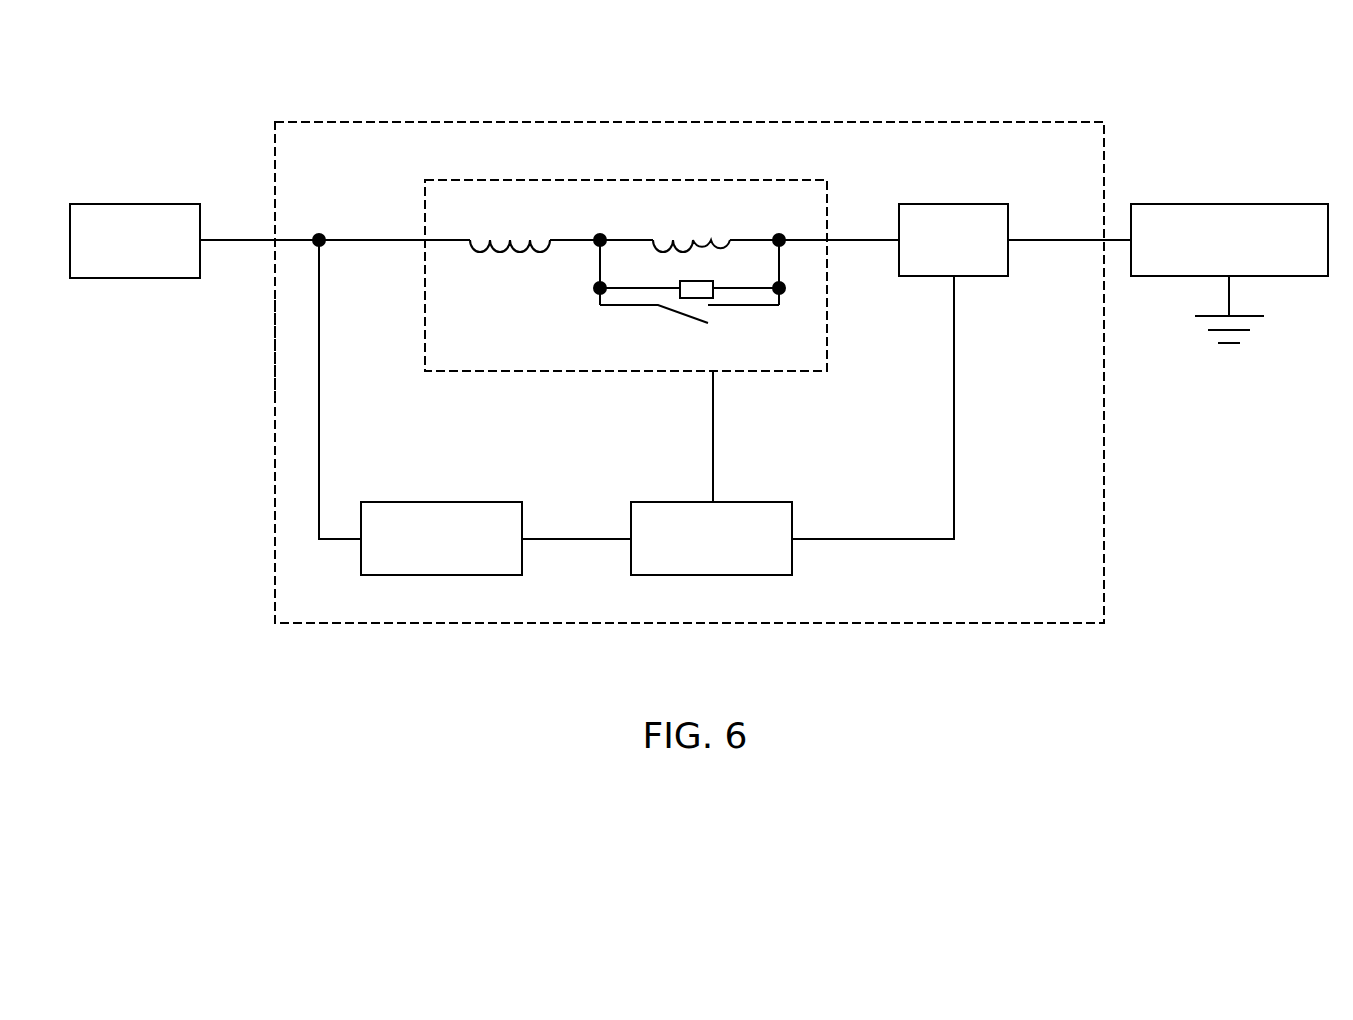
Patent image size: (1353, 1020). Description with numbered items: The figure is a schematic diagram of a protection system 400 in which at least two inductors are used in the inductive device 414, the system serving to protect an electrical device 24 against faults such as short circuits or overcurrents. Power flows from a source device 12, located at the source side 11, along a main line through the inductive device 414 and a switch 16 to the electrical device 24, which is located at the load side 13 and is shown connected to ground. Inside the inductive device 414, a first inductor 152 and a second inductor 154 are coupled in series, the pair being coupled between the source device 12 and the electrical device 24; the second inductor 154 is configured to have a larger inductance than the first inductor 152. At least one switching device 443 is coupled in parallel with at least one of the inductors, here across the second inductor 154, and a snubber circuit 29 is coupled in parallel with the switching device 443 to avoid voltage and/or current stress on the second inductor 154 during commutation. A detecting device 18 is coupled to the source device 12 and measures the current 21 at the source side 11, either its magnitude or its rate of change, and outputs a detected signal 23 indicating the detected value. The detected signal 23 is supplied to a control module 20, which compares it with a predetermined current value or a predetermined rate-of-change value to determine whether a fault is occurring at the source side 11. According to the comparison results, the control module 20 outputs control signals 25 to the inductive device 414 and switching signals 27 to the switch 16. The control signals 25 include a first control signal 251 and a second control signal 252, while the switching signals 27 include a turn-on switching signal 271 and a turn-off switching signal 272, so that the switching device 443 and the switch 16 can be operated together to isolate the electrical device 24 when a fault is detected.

The protection system 400 is at (313, 106).
The source side 11 is at (265, 298).
The source device 12 is at (128, 207).
The current 21 is at (319, 355).
The inductive device 414 is at (828, 323).
The first inductor 152 is at (502, 255).
The second inductor 154 is at (690, 250).
The snubber circuit 29 is at (702, 287).
The switching device 443 is at (680, 312).
The switch 16 is at (938, 220).
The electrical device 24 is at (1218, 223).
The load side 13 is at (1175, 299).
The detecting device 18 is at (486, 566).
The detected signal 23 is at (573, 537).
The control module 20 is at (768, 562).
The control signals 25 is at (800, 422).
The first control signal 251 is at (781, 404).
The second control signal 252 is at (781, 478).
The switching signals 27 is at (1045, 368).
The turn-on switching signal 271 is at (1022, 343).
The turn-off switching signal 272 is at (1022, 474).